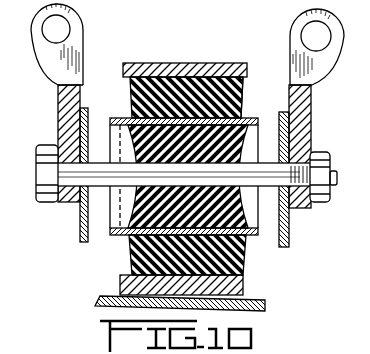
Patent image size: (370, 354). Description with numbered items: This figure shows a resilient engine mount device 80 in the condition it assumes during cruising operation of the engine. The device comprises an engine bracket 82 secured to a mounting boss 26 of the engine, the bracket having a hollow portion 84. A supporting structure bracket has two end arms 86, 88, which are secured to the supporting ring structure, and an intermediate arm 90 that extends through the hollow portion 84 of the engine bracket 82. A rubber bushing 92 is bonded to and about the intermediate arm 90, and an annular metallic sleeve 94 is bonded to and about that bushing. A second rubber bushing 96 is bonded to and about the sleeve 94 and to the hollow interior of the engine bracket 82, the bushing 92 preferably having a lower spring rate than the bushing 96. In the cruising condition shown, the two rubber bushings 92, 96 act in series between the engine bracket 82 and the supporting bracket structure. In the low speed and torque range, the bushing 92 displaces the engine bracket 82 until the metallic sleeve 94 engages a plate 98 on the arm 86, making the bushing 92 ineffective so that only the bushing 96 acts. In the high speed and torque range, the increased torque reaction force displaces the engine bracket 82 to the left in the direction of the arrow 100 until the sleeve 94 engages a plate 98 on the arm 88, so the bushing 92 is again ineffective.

The mounting boss 26 is at (254, 297).
The resilient engine mount device 80 is at (232, 40).
The engine bracket 82 is at (183, 62).
The hollow portion 84 is at (124, 88).
The end arm 86 is at (319, 73).
The end arm 88 is at (66, 71).
The intermediate arm 90 is at (69, 201).
The rubber bushing 92 is at (240, 138).
The annular metallic sleeve 94 is at (258, 117).
The second rubber bushing 96 is at (245, 85).
The plate 98 is at (79, 229).
The arrow 100 is at (77, 274).